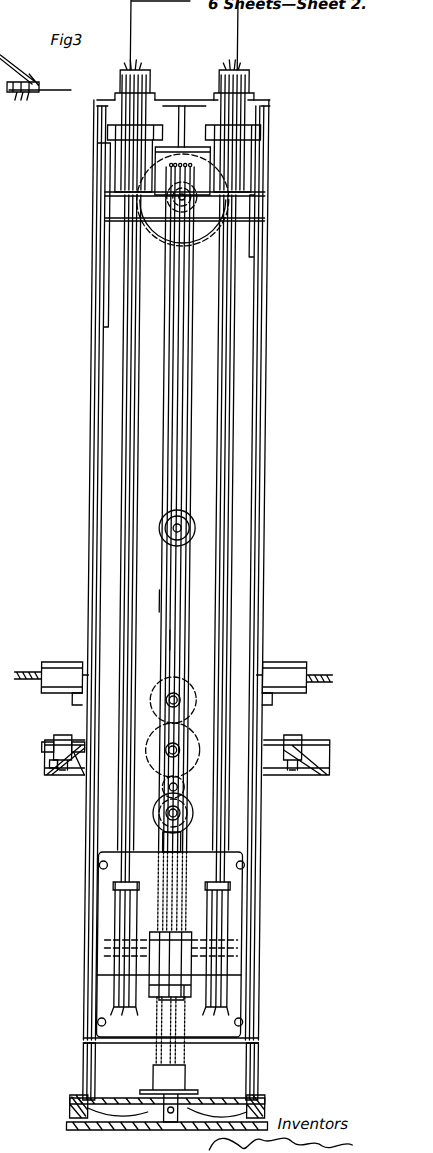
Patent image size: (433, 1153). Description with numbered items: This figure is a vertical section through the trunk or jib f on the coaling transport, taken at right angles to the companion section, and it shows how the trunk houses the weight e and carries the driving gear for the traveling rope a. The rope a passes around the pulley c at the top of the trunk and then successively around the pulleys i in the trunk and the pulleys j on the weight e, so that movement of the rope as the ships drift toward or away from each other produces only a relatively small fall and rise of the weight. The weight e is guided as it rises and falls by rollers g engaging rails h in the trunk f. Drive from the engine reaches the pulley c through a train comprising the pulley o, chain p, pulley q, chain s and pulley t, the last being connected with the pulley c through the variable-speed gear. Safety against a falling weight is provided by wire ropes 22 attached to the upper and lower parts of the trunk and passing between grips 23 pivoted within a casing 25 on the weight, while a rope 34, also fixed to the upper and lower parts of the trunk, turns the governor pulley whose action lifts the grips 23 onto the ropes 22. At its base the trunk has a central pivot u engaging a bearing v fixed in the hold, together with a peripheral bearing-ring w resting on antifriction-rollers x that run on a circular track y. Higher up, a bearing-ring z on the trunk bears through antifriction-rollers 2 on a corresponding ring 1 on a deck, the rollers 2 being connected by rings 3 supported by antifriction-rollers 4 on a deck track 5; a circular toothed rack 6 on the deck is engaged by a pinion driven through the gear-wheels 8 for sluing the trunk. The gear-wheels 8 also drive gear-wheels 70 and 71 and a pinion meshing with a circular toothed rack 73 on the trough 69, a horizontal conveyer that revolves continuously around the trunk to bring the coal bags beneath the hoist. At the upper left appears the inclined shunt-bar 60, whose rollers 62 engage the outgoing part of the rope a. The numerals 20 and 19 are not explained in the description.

The shunt-bar 60 is at (17, 62).
The rollers 62 is at (39, 97).
The trunk or jib f is at (96, 568).
The pulleys in the trunk i is at (184, 120).
The chain s is at (194, 491).
The pulley t is at (199, 203).
The pulley c is at (198, 250).
The pulley q is at (201, 532).
The wire ropes 22 is at (166, 596).
The rope 34 is at (178, 641).
The chain p is at (161, 694).
The gear-wheel 71 is at (190, 690).
The gear-wheel 70 is at (198, 738).
The gear-wheels 8 is at (170, 790).
The pulley o is at (202, 816).
The traveling rope a is at (238, 834).
The circular rack or trough 69 is at (287, 680).
The circular toothed rack 73 is at (285, 704).
The ring 1 is at (175, 757).
The antifriction-rollers 2 is at (298, 735).
The circular toothed rack 6 is at (50, 742).
The rings 3 is at (58, 768).
The track 5 is at (52, 770).
The antifriction-rollers 4 is at (60, 772).
The bearing-ring z is at (84, 770).
The rails h is at (248, 957).
The rollers g is at (286, 1024).
The pulleys on the weight j is at (170, 960).
The weight e is at (179, 998).
The casing 25 is at (160, 1005).
The grips 23 is at (180, 1005).
The peripheral bearing-ring w is at (265, 1097).
The bearing block 20 is at (180, 1086).
The antifriction-rollers x is at (259, 1098).
The circular track y is at (82, 1112).
The central pivot u is at (176, 1105).
The bearing v is at (190, 1105).
The base plate 19 is at (150, 1128).